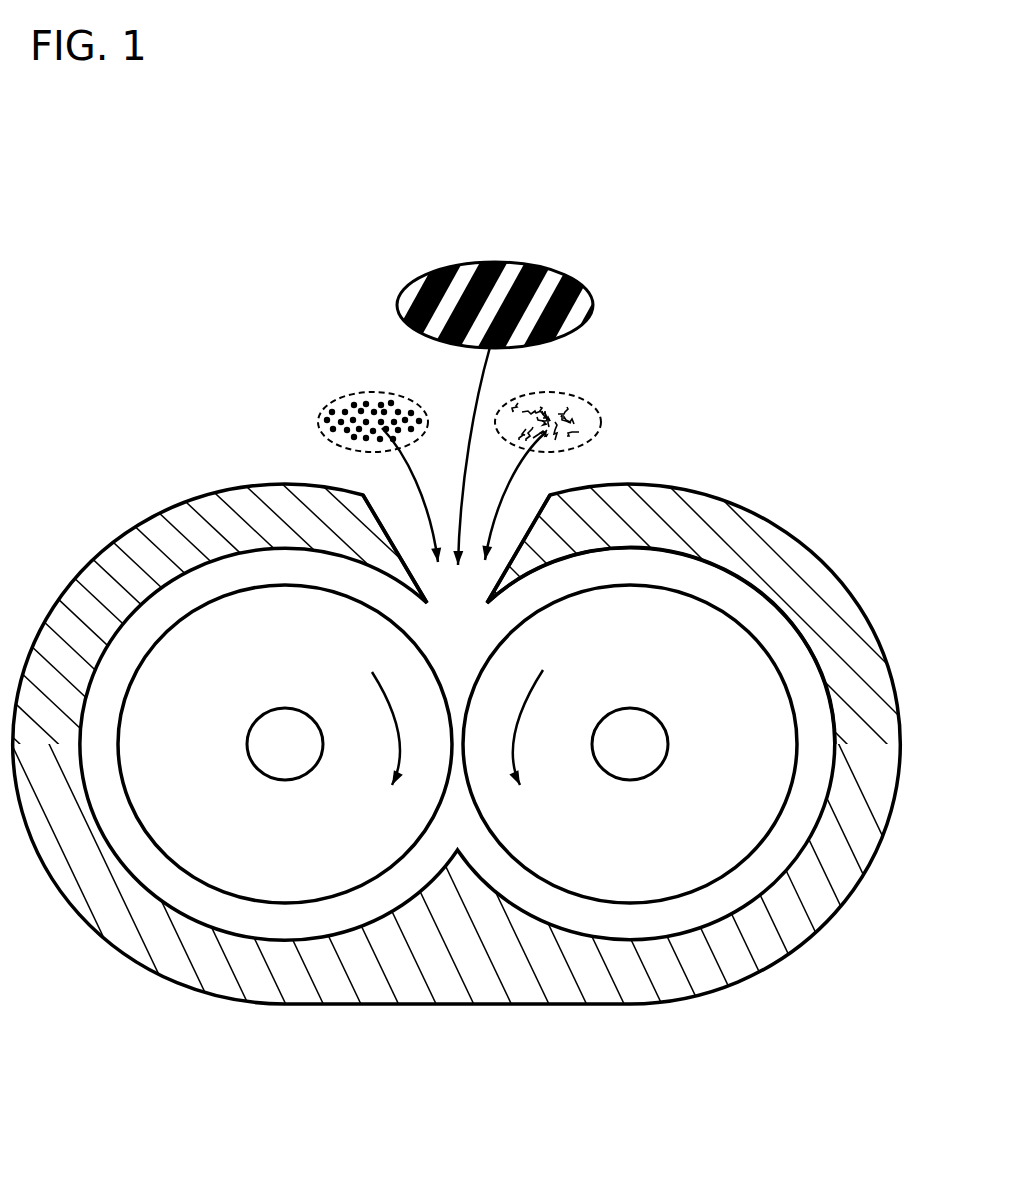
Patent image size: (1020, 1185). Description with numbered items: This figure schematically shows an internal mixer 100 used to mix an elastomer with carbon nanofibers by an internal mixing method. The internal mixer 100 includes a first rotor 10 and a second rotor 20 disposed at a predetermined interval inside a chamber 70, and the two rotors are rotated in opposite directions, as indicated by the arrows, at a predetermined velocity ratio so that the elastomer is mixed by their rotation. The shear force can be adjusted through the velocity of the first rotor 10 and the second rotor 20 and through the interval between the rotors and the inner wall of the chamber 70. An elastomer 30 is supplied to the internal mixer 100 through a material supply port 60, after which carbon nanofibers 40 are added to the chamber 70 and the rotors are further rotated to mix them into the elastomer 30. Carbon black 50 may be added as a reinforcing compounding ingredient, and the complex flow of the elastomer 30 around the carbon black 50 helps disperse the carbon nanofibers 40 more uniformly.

The internal mixer 100 is at (193, 470).
The first rotor 10 is at (762, 797).
The second rotor 20 is at (222, 797).
The elastomer 30 is at (535, 292).
The carbon nanofibers 40 is at (560, 407).
The carbon black 50 is at (395, 410).
The material supply port 60 is at (513, 527).
The chamber 70 is at (678, 573).